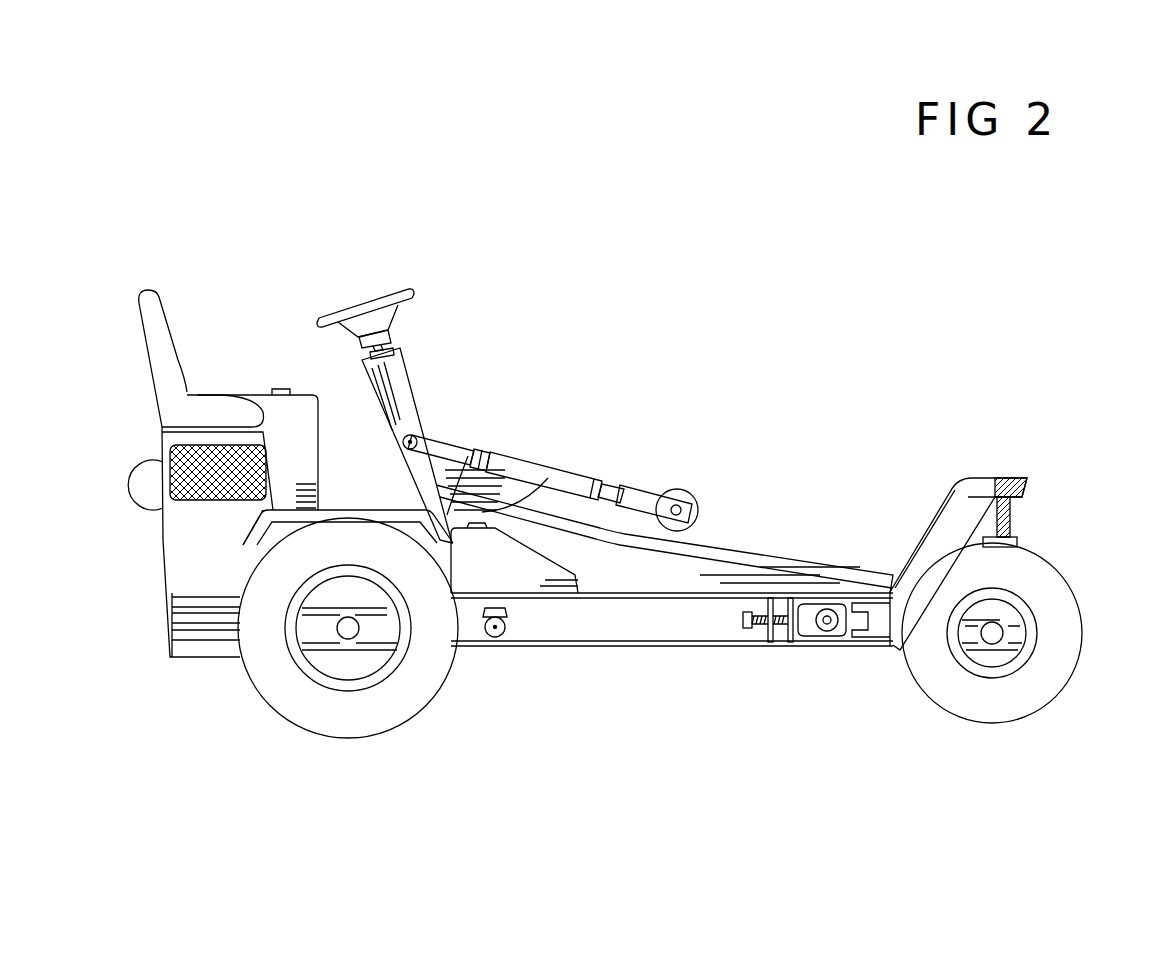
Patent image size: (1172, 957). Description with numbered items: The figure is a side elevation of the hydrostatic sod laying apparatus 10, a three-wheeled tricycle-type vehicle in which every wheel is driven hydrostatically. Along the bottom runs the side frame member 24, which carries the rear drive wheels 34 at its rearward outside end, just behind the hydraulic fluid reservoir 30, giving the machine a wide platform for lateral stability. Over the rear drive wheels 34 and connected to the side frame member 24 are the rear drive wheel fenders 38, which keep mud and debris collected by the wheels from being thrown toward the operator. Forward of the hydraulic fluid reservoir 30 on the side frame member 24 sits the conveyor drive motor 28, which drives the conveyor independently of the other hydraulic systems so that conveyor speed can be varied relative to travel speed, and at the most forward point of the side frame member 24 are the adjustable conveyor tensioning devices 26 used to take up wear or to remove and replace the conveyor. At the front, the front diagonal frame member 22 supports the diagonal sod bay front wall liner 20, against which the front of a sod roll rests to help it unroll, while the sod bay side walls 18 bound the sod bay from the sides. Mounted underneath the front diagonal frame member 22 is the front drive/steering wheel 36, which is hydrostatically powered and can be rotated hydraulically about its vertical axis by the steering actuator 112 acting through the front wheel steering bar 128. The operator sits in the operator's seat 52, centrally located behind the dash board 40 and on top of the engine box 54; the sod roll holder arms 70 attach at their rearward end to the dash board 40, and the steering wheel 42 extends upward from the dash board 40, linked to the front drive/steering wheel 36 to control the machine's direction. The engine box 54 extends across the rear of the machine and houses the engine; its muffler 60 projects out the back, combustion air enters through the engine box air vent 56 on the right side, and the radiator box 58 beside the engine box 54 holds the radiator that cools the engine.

The hydrostatic sod laying apparatus 10 is at (268, 305).
The sod bay side walls 18 is at (632, 490).
The sod bay front wall liner 20 is at (903, 530).
The front diagonal frame member 22 is at (973, 527).
The side frame member 24 is at (625, 620).
The conveyor tensioning devices 26 is at (807, 634).
The conveyor drive motor 28 is at (495, 638).
The hydraulic fluid reservoir 30 is at (518, 560).
The rear drive wheels 34 is at (387, 735).
The front drive/steering wheel 36 is at (950, 722).
The rear drive wheel fenders 38 is at (333, 527).
The dash board 40 is at (417, 392).
The steering wheel 42 is at (374, 290).
The operator's seat 52 is at (150, 285).
The engine box 54 is at (228, 540).
The engine box air vent 56 is at (205, 507).
The radiator box 58 is at (305, 385).
The muffler 60 is at (148, 505).
The sod roll holder arms 70 is at (531, 457).
The steering actuator 112 is at (1017, 518).
The front wheel steering bar 128 is at (1027, 542).